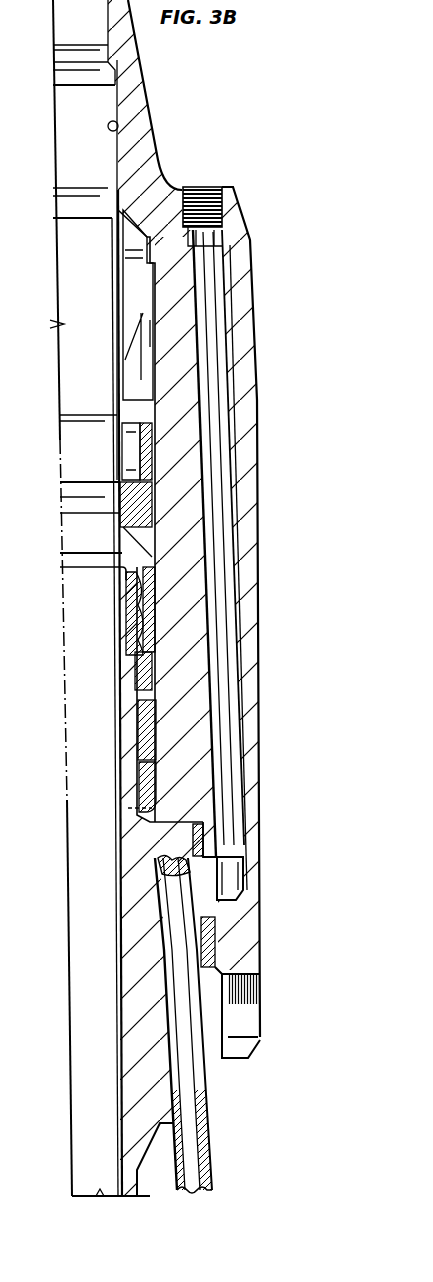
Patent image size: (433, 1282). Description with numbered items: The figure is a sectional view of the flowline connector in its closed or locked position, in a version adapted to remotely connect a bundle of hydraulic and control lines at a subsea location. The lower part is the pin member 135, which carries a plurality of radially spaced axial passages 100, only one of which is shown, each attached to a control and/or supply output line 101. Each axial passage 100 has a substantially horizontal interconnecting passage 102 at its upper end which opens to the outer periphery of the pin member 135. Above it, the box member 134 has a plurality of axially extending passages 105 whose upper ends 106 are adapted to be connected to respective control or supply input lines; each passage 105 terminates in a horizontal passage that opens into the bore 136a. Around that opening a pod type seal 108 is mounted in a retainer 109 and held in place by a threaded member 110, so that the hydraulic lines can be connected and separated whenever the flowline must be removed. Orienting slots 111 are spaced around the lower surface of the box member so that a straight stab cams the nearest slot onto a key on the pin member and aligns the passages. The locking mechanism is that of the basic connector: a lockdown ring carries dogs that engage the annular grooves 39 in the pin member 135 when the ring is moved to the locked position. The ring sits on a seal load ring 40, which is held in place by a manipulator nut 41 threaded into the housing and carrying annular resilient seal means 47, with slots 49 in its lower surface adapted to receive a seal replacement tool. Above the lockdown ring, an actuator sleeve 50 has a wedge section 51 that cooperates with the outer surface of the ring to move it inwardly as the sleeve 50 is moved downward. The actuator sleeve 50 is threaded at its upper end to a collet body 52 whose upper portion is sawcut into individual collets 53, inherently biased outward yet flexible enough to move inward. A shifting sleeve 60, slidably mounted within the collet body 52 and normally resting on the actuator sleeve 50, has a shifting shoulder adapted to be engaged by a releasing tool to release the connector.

The bore 136a is at (116, 121).
The upper end 106 is at (224, 200).
The shifting sleeve 60 is at (118, 265).
The collets 53 is at (134, 318).
The axially extending passages 105 is at (214, 306).
The box member 134 is at (163, 377).
The collet body 52 is at (130, 445).
The actuator sleeve 50 is at (128, 522).
The wedge section 51 is at (157, 617).
The annular grooves 39 is at (128, 630).
The seal load ring 40 is at (152, 670).
The pin member 135 is at (122, 688).
The manipulator nut 41 is at (160, 722).
The annular resilient seal means 47 is at (160, 782).
The slots 49 is at (128, 808).
The retainer 109 is at (205, 838).
The interconnecting passage 102 is at (165, 858).
The pod type seal 108 is at (235, 862).
The threaded member 110 is at (215, 945).
The orienting slots 111 is at (246, 1005).
The axial passages 100 is at (196, 1090).
The control and/or supply output lines 101 is at (214, 1170).